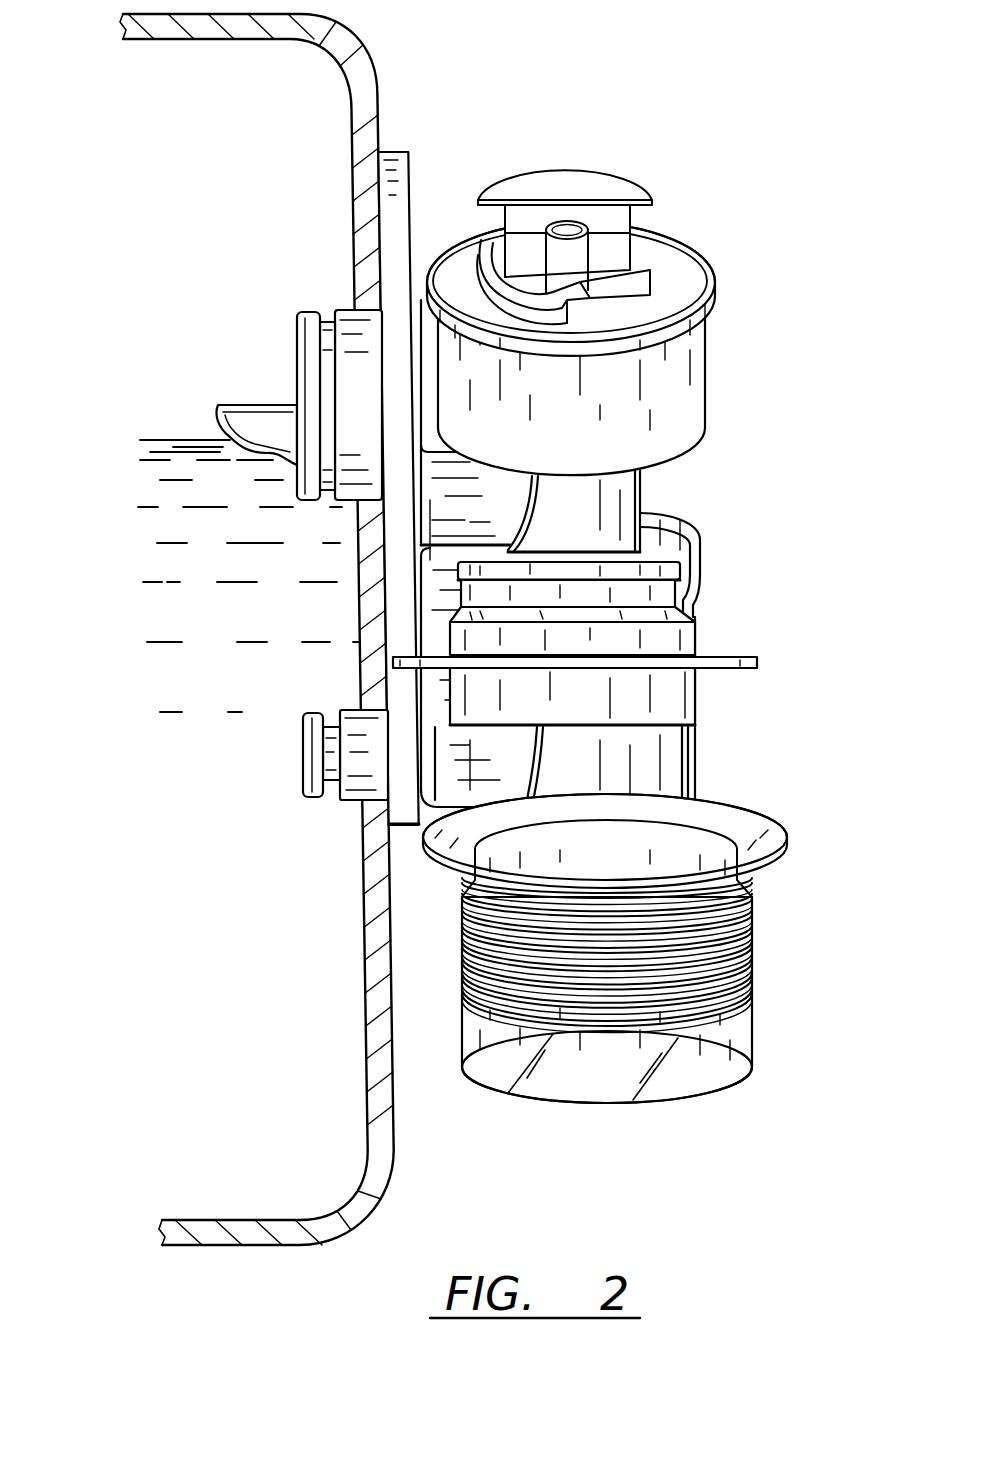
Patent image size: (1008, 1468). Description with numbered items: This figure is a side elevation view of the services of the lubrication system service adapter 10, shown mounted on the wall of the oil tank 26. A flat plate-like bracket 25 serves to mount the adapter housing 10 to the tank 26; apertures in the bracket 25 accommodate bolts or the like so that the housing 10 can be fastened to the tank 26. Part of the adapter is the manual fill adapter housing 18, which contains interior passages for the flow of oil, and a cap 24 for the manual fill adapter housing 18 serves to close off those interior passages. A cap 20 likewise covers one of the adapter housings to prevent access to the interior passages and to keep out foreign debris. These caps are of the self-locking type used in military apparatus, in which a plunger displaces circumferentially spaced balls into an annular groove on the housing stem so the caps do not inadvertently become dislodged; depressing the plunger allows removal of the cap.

The lubrication system service adapter 10 is at (694, 176).
The manual fill adapter housing 18 is at (707, 382).
The cap 20 is at (700, 637).
The cap 24 is at (752, 1017).
The bracket 25 is at (412, 173).
The oil tank 26 is at (353, 220).